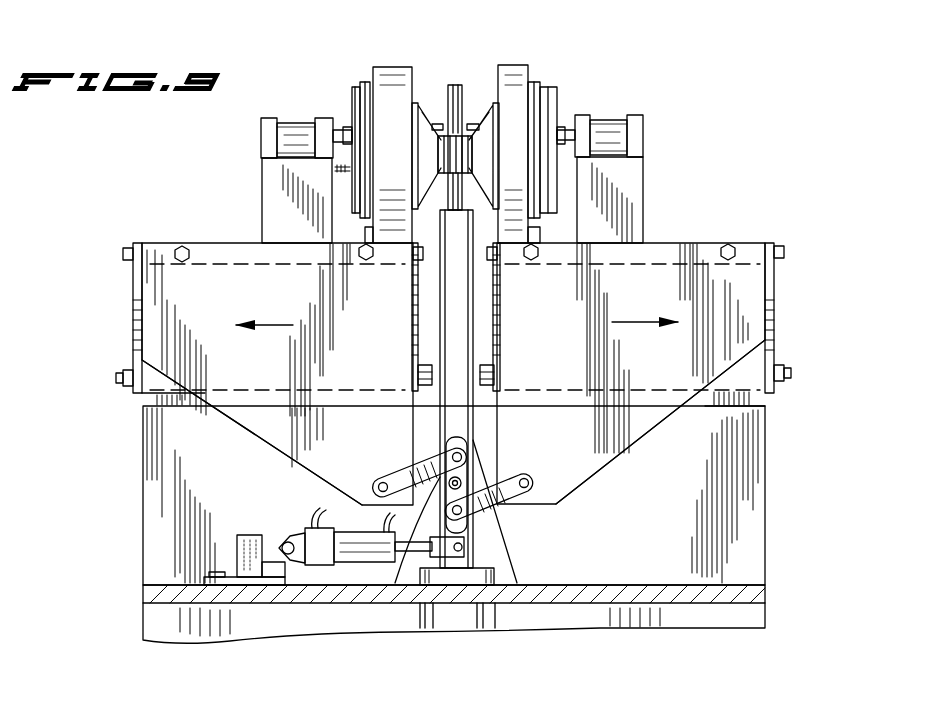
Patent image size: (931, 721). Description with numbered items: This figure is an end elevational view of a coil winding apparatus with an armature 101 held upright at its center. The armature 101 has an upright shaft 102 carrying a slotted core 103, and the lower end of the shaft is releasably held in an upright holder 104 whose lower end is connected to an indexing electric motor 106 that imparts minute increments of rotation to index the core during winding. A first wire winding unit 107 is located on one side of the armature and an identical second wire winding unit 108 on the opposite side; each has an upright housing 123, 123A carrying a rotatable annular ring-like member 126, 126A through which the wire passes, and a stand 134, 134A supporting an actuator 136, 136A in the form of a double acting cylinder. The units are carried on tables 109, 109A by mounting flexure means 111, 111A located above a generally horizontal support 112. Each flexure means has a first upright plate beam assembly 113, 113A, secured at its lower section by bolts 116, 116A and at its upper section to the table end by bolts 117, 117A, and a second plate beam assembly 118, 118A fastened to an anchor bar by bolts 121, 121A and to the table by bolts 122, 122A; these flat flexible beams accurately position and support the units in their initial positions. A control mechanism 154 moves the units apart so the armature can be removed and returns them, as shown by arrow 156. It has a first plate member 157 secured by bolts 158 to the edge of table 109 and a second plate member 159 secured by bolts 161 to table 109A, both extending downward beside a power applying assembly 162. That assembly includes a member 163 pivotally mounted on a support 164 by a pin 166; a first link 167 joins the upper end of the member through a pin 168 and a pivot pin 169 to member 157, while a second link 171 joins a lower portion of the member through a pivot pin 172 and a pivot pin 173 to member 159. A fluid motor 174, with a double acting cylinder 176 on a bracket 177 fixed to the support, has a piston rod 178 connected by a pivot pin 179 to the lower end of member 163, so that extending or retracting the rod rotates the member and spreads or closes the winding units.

The armature 101 is at (457, 66).
The upright shaft 102 is at (462, 88).
The slotted core 103 is at (447, 130).
The upright holder 104 is at (453, 413).
The electric motor 106 is at (477, 573).
The first wire winding unit 107 is at (364, 80).
The second wire winding unit 108 is at (592, 84).
The table 109 is at (228, 243).
The table 109A is at (700, 243).
The mounting flexure means 111 is at (112, 312).
The mounting flexure means 111A is at (812, 308).
The support 112 is at (722, 604).
The first upright plate beam assembly 113 is at (131, 336).
The first upright plate beam assembly 113A is at (776, 326).
The bolts 116 is at (118, 380).
The bolts 116A is at (790, 373).
The bolts 117 is at (128, 252).
The bolts 117A is at (778, 250).
The second plate beam assembly 118 is at (411, 316).
The second plate beam assembly 118A is at (502, 322).
The bolts 121 is at (425, 364).
The bolts 121A is at (488, 364).
The bolts 122 is at (412, 270).
The bolts 122A is at (493, 262).
The upright housing 123 is at (392, 68).
The upright housing 123A is at (518, 72).
The annular ring-like member 126 is at (352, 96).
The annular ring-like member 126A is at (562, 110).
The stand 134 is at (285, 186).
The stand 134A is at (620, 198).
The actuator 136 is at (259, 138).
The actuator 136A is at (645, 137).
The control mechanism 154 is at (192, 423).
The arrow 156 is at (275, 325).
The first plate member 157 is at (272, 438).
The bolts 158 is at (190, 262).
The second plate member 159 is at (652, 413).
The bolts 161 is at (720, 256).
The power applying assembly 162 is at (357, 560).
The member 163 is at (485, 533).
The support 164 is at (505, 568).
The pin 166 is at (468, 483).
The first link 167 is at (432, 456).
The pin 168 is at (466, 458).
The pivot pin 169 is at (383, 480).
The second link 171 is at (530, 490).
The pivot pin 172 is at (485, 512).
The pivot pin 173 is at (530, 483).
The fluid motor 174 is at (300, 521).
The double acting cylinder 176 is at (362, 590).
The bracket 177 is at (236, 552).
The piston rod 178 is at (414, 555).
The pivot pin 179 is at (458, 553).